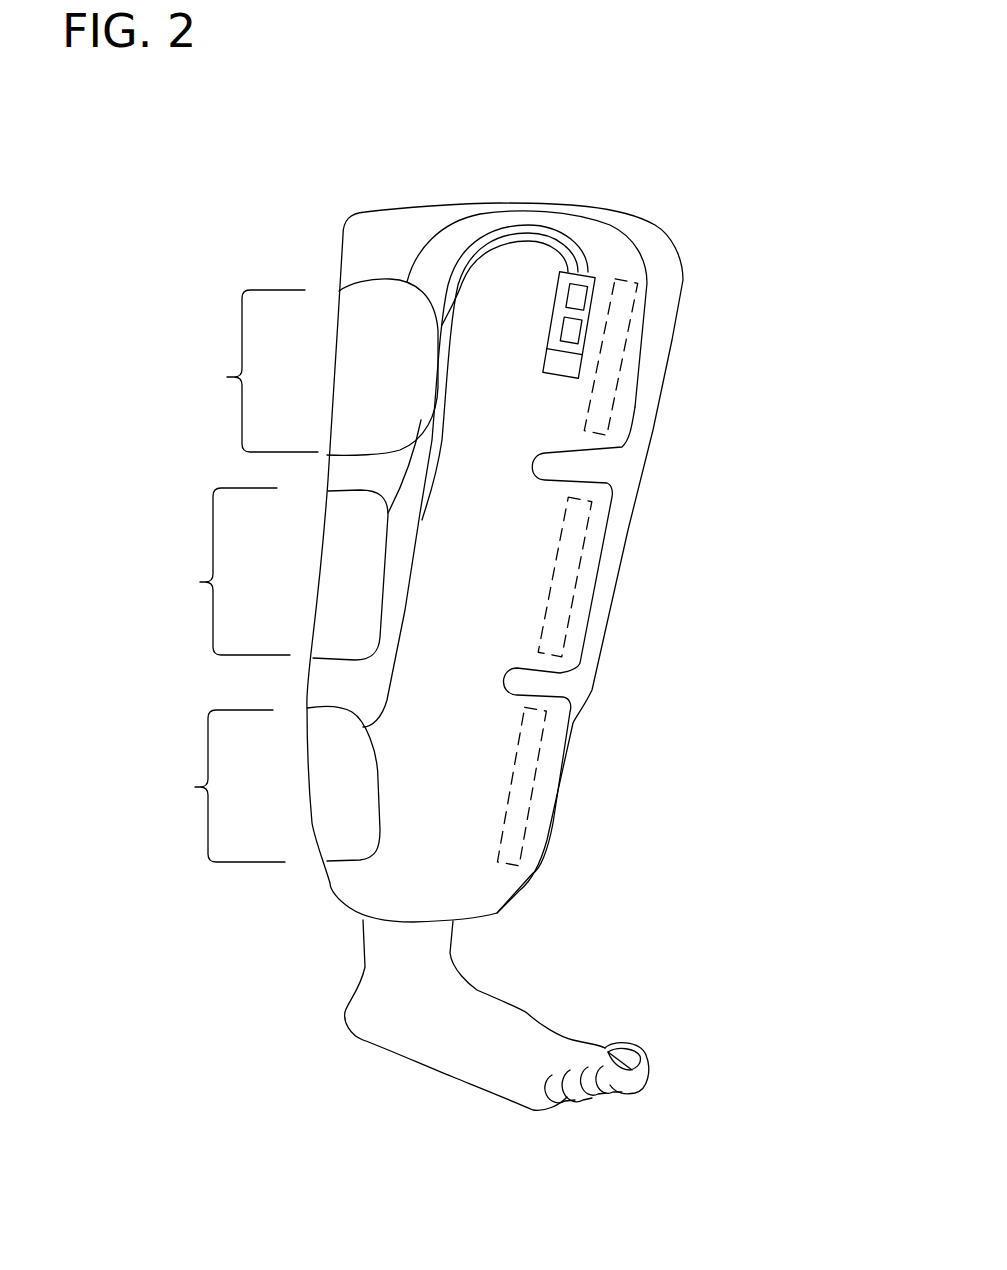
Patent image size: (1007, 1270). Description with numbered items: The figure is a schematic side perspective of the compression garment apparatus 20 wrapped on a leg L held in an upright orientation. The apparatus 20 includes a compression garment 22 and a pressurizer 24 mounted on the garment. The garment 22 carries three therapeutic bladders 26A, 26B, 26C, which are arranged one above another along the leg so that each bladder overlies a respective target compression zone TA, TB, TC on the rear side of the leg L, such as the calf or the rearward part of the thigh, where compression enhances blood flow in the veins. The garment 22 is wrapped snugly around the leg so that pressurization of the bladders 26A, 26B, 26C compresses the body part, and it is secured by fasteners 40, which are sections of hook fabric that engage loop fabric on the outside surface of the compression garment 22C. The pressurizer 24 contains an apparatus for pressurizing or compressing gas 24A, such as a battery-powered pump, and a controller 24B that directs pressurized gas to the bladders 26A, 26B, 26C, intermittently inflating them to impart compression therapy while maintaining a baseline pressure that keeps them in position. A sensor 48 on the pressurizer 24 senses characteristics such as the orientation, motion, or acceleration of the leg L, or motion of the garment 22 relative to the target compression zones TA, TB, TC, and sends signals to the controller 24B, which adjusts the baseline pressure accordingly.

The compression garment apparatus 20 is at (243, 212).
The compression garment 22 is at (683, 277).
The outside surface of the compression garment 22C is at (620, 473).
The pressurizer 24 is at (591, 435).
The apparatus for pressurizing or compressing gas 24A is at (562, 363).
The controller 24B is at (571, 330).
The sensor 48 is at (577, 297).
The fasteners 40 is at (618, 414).
The therapeutic bladder 26A is at (337, 788).
The therapeutic bladder 26B is at (350, 580).
The therapeutic bladder 26C is at (380, 375).
The target compression zone TA is at (215, 786).
The target compression zone TB is at (218, 571).
The target compression zone TC is at (248, 371).
The leg L is at (458, 938).